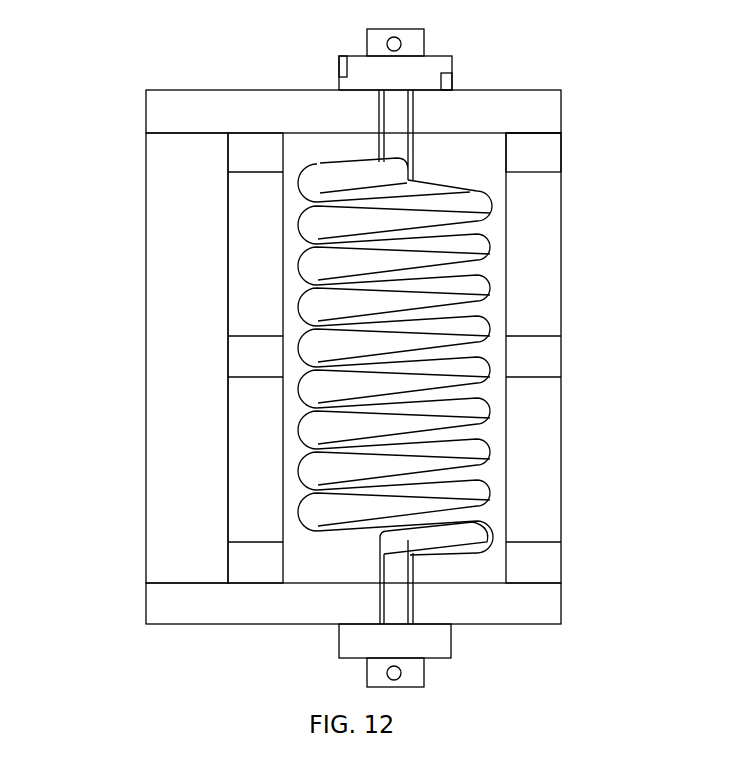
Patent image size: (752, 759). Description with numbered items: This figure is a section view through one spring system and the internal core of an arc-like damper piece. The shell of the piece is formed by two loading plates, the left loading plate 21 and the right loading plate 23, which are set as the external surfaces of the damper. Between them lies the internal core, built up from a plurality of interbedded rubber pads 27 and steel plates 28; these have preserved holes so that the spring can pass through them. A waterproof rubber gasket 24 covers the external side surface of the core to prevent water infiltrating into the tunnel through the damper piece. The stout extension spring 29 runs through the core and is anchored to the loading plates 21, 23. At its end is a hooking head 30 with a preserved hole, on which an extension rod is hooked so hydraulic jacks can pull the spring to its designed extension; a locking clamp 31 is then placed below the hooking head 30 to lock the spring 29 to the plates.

The left loading plate 21 is at (180, 112).
The right loading plate 23 is at (180, 602).
The waterproof rubber gasket 24 is at (180, 218).
The rubber pads 27 is at (522, 251).
The steel plates 28 is at (522, 157).
The stout extension springs 29 is at (490, 445).
The hooking head 30 is at (424, 30).
The locking clamp 31 is at (452, 57).